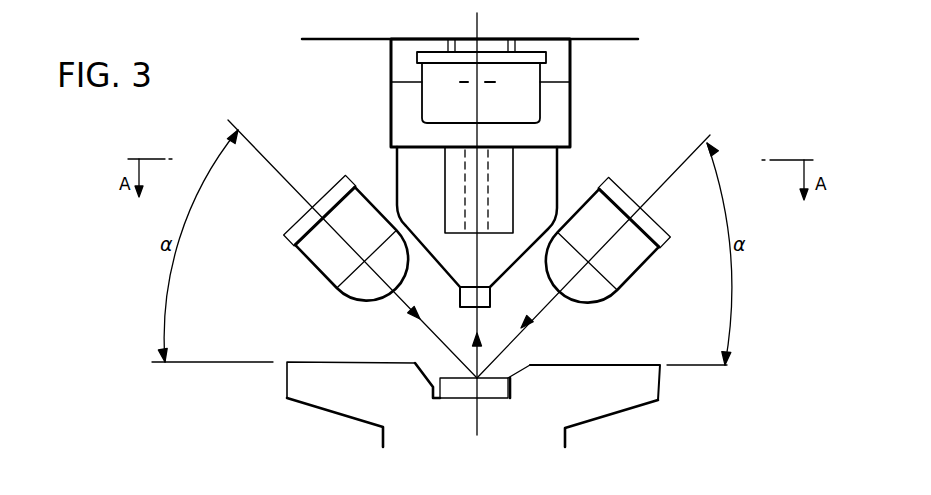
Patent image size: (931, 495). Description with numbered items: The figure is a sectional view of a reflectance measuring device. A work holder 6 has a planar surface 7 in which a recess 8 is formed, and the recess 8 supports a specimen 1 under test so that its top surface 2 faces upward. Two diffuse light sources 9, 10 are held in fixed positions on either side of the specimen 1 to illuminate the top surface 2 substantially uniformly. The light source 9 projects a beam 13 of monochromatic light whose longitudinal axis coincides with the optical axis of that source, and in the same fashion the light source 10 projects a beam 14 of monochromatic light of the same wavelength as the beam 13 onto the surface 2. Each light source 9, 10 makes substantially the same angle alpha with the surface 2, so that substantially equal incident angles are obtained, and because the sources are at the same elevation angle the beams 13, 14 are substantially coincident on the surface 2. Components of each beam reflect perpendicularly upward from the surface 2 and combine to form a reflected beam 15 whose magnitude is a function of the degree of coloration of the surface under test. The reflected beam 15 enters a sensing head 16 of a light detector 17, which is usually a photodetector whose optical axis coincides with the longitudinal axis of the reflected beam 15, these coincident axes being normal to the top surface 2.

The specimen 1 is at (498, 399).
The top surface 2 is at (509, 379).
The work holder 6 is at (615, 420).
The planar surface 7 is at (640, 365).
The recess 8 is at (415, 364).
The diffuse light source 9 is at (615, 300).
The diffuse light source 10 is at (343, 286).
The beam 13 is at (537, 313).
The beam 14 is at (404, 304).
The reflected beam 15 is at (477, 322).
The sensing head 16 is at (460, 312).
The light detector 17 is at (578, 110).